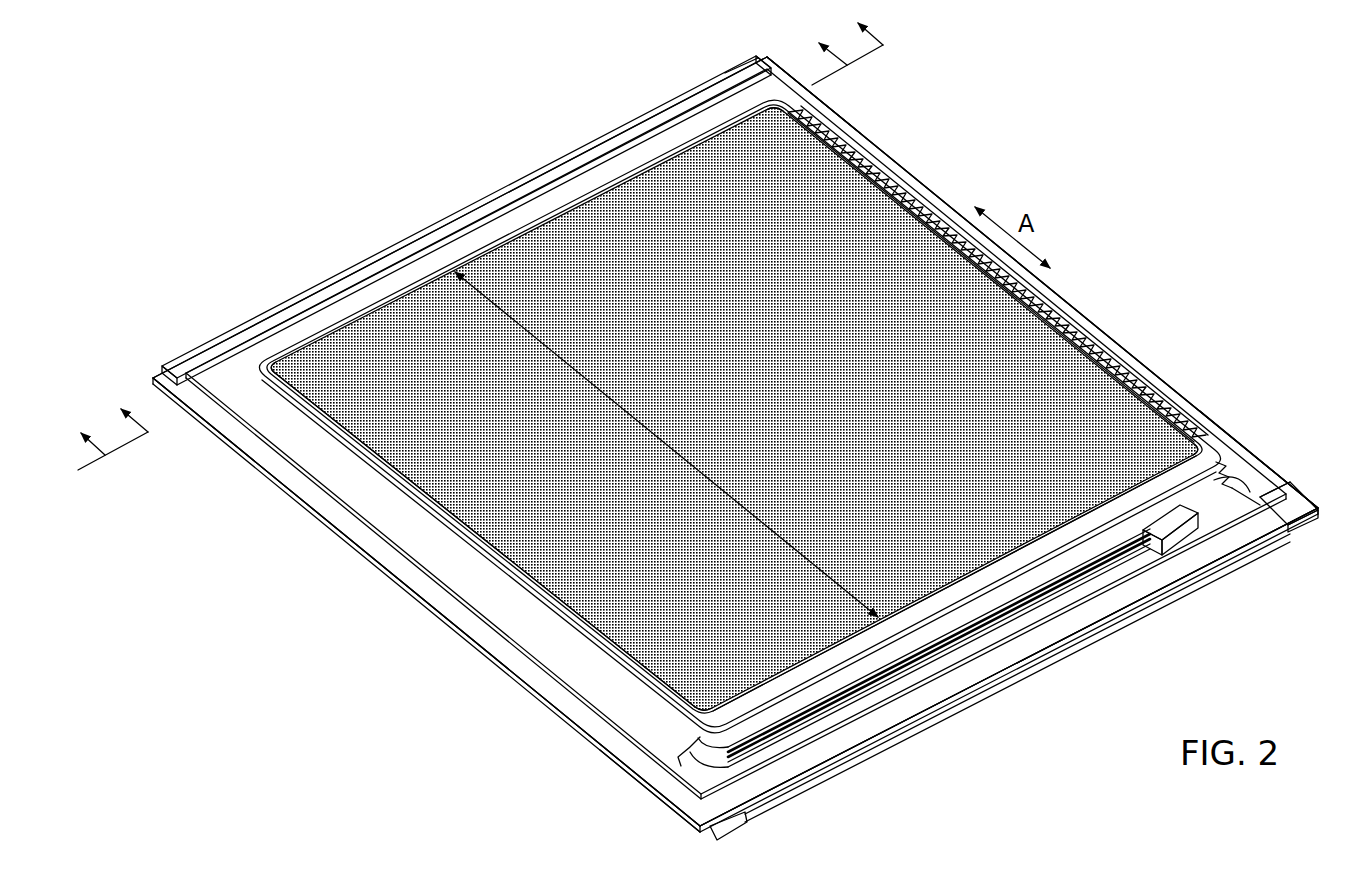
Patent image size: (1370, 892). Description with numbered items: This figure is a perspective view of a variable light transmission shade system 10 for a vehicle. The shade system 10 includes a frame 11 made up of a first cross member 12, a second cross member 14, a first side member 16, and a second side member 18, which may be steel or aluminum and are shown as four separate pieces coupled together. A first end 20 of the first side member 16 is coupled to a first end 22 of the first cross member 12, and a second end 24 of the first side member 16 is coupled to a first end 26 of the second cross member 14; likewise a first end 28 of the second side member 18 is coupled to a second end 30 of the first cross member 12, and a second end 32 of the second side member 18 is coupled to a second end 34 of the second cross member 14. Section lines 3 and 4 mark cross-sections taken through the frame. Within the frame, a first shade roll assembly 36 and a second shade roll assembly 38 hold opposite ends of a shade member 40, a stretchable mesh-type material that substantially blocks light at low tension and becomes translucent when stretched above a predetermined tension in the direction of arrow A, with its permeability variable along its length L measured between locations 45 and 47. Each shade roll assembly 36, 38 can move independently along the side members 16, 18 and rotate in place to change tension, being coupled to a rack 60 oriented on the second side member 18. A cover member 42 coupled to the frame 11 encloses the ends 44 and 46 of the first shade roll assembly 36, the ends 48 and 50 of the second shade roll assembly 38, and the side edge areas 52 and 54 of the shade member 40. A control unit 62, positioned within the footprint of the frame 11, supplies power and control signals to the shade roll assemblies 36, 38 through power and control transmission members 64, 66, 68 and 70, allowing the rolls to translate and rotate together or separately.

The section line 3 is at (480, 244).
The section line 4 is at (469, 227).
The variable light transmission shade system 10 is at (469, 121).
The frame 11 is at (1033, 681).
The first cross member 12 is at (240, 343).
The second cross member 14 is at (1205, 548).
The first side member 16 is at (445, 597).
The second side member 18 is at (905, 186).
The first end of first side member 20 is at (213, 408).
The first end of first cross member 22 is at (187, 352).
The second end of first side member 24 is at (677, 791).
The first end of second cross member 26 is at (786, 801).
The first end of second side member 28 is at (816, 90).
The second end of first cross member 30 is at (713, 73).
The second end of second side member 32 is at (1283, 462).
The second end of second cross member 34 is at (1281, 543).
The first shade roll assembly 36 is at (662, 160).
The second shade roll assembly 38 is at (968, 600).
The shade member 40 is at (741, 396).
The cover member 42 is at (578, 630).
The end of first shade roll assembly 44 is at (283, 354).
The location 45 is at (455, 272).
The end of first shade roll assembly 46 is at (762, 104).
The location 47 is at (893, 618).
The end of second shade roll assembly 48 is at (716, 696).
The end of second shade roll assembly 50 is at (1184, 452).
The side edge area of shade member 52 is at (443, 497).
The side edge area of shade member 54 is at (945, 262).
The rack 60 is at (1003, 290).
The control unit 62 is at (1172, 545).
The power and control transmission member 64 is at (860, 675).
The power and control transmission member 66 is at (890, 650).
The power and control transmission member 68 is at (1265, 500).
The power and control transmission member 70 is at (1222, 470).